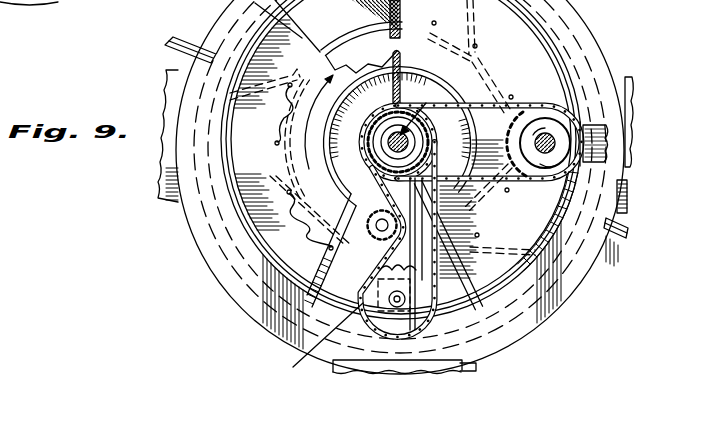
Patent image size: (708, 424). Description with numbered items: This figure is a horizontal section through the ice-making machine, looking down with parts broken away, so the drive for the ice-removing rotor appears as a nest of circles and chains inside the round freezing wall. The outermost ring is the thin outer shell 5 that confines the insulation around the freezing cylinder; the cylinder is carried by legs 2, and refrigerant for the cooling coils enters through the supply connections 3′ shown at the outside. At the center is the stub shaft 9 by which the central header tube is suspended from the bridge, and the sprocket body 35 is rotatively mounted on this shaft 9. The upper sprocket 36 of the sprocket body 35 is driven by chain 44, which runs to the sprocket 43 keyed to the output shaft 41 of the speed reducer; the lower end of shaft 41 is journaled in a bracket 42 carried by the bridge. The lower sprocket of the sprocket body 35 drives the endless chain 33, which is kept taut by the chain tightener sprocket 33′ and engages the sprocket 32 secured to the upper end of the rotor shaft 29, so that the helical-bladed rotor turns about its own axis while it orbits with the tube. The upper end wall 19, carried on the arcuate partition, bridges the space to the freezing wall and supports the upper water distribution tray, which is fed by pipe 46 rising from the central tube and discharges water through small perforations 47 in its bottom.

The legs 2 is at (166, 202).
The supply connections 3′ is at (616, 235).
The thin outer shell 5 is at (58, 2).
The shaft 9 is at (413, 108).
The upper end wall 19 is at (350, 29).
The rotor shaft 29 is at (368, 317).
The sprocket 32 is at (315, 345).
The endless chain 33 is at (437, 303).
The chain tightener sprocket 33′ is at (360, 263).
The sprocket body 35 is at (382, 148).
The sprocket 36 is at (377, 106).
The output shaft 41 is at (568, 116).
The bracket 42 is at (586, 124).
The sprocket 43 is at (545, 168).
The chain 44 is at (480, 93).
The pipe 46 is at (402, 64).
The perforations 47 is at (274, 112).